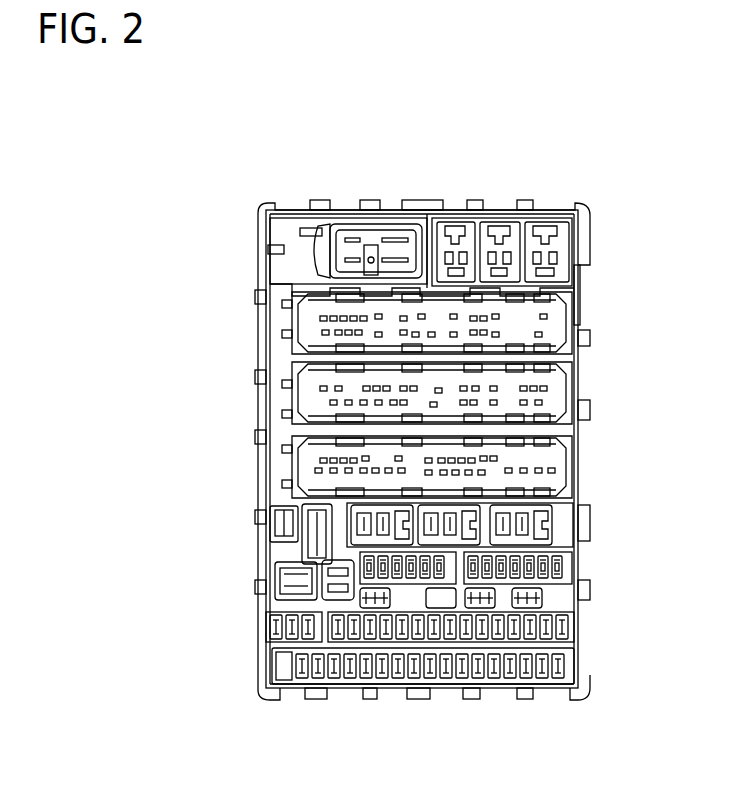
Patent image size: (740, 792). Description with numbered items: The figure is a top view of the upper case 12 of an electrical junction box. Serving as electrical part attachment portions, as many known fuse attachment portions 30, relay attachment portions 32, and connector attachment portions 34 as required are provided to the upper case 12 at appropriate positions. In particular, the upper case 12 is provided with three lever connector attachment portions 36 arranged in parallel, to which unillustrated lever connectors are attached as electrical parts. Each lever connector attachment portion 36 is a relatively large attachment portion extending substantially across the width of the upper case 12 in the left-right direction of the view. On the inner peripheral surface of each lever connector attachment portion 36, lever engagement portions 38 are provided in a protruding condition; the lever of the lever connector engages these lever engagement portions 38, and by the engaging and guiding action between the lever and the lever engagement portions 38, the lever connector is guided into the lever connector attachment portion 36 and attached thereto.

The upper case 12 is at (422, 450).
The fuse attachment portions 30 is at (342, 668).
The relay attachment portions 32 is at (462, 283).
The connector attachment portions 34 is at (315, 562).
The lever connector attachment portions 36 is at (283, 303).
The lever engagement portions 38 is at (405, 300).